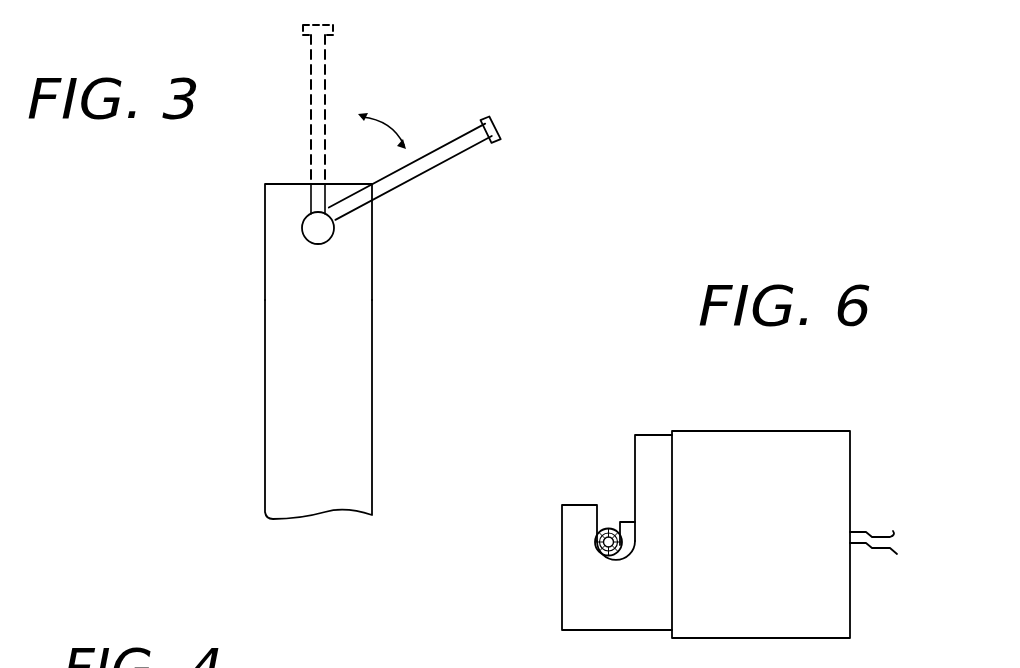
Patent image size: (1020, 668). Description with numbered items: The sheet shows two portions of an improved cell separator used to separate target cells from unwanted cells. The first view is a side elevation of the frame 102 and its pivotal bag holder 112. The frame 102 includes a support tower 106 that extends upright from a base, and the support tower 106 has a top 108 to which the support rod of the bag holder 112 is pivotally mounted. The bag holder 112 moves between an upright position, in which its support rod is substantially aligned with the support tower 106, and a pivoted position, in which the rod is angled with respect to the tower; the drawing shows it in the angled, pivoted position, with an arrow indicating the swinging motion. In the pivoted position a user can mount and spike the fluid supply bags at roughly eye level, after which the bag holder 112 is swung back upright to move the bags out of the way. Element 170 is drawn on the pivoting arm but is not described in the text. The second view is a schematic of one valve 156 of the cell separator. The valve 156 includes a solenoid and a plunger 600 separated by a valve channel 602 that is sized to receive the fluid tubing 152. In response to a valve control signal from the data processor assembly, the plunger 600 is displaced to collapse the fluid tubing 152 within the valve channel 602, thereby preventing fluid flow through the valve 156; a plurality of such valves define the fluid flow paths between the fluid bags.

In FIG. 3, the frame 102 is at (455, 287).
In FIG. 3, the support tower 106 is at (265, 465).
In FIG. 3, the top 108 is at (265, 205).
In FIG. 3, the bag holder 112 is at (431, 54).
In FIG. 3, the lever 170 is at (433, 177).
In FIG. 6, the fluid tubing 152 is at (598, 530).
In FIG. 6, the valve 156 is at (748, 431).
In FIG. 6, the plunger 600 is at (610, 557).
In FIG. 6, the valve channel 602 is at (604, 490).